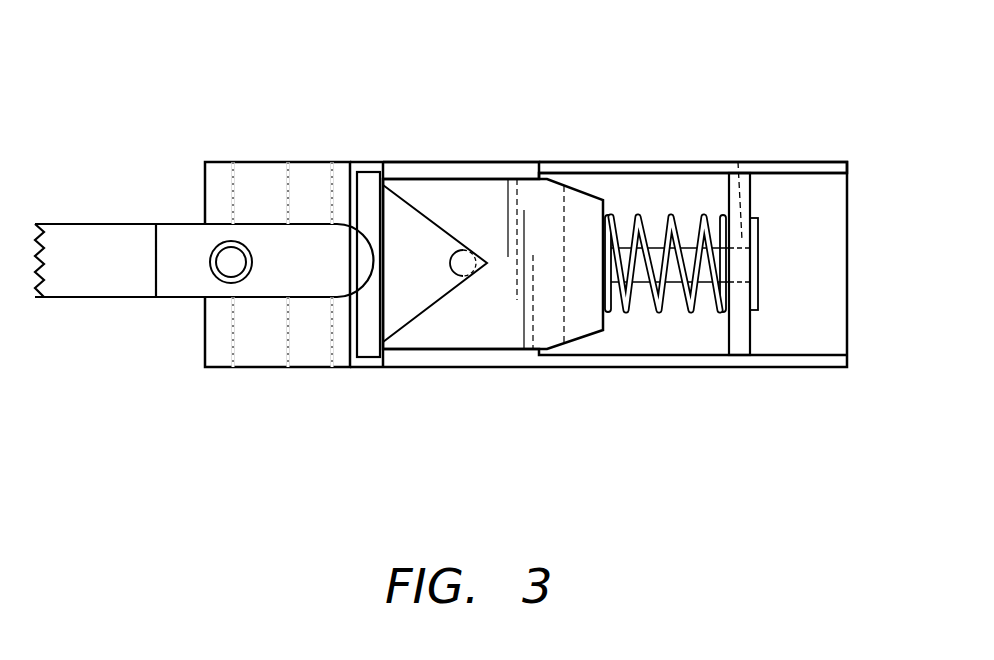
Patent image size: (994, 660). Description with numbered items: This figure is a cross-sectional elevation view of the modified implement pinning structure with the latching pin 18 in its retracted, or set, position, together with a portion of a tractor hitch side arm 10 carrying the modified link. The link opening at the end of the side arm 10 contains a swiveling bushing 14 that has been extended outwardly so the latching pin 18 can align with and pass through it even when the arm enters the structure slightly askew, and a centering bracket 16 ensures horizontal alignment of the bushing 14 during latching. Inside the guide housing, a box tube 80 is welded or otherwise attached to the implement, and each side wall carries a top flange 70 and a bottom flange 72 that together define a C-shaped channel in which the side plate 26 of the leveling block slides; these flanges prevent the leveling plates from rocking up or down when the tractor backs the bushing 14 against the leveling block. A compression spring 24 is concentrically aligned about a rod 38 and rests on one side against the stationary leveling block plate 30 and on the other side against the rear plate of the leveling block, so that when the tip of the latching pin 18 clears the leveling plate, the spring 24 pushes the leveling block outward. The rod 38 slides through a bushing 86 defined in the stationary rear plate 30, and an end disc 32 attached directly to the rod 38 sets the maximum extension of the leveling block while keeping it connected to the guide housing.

The side arm 10 is at (139, 233).
The bushing 14 is at (207, 258).
The centering bracket 16 is at (219, 178).
The latching pin 18 is at (458, 262).
The spring 24 is at (638, 210).
The side plate 26 is at (445, 343).
The leveling block plate 30 is at (752, 337).
The end disc 32 is at (758, 272).
The rod 38 is at (680, 268).
The top flange 70 is at (415, 167).
The bottom flange 72 is at (411, 360).
The box tube 80 is at (598, 167).
The bushing 86 is at (738, 162).